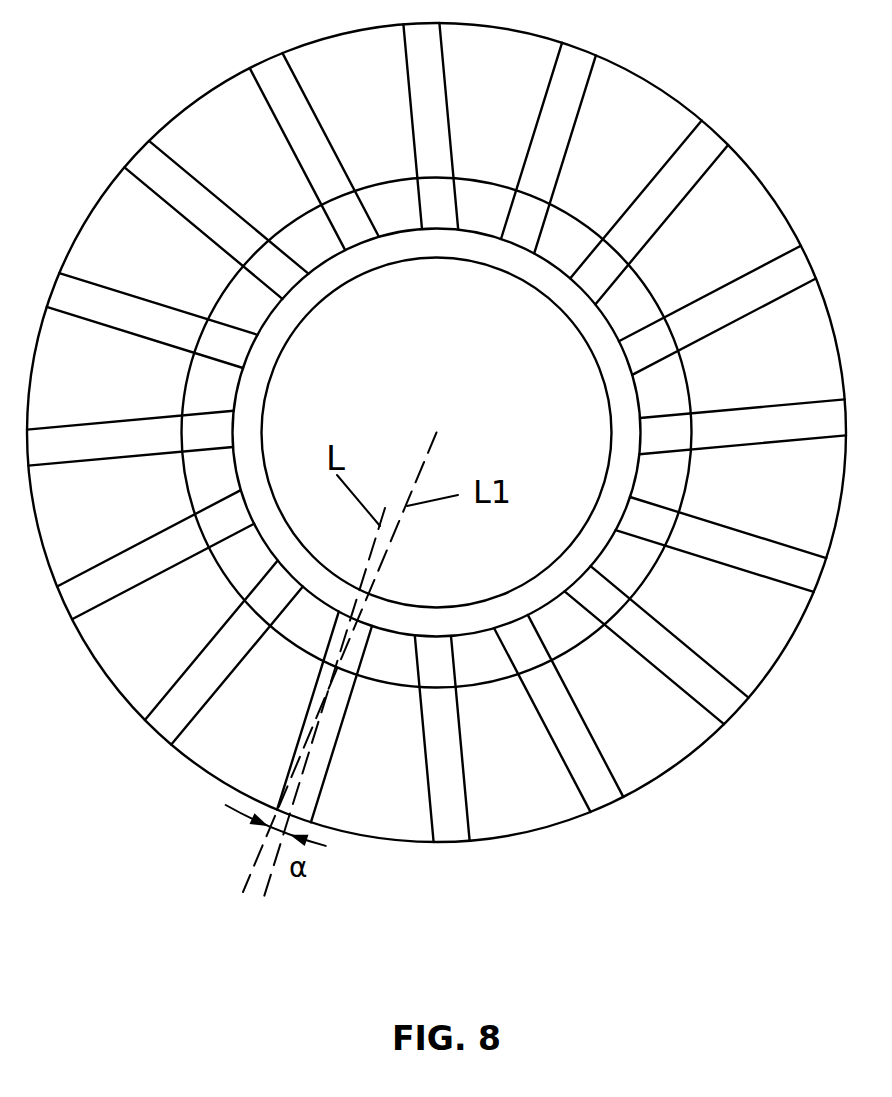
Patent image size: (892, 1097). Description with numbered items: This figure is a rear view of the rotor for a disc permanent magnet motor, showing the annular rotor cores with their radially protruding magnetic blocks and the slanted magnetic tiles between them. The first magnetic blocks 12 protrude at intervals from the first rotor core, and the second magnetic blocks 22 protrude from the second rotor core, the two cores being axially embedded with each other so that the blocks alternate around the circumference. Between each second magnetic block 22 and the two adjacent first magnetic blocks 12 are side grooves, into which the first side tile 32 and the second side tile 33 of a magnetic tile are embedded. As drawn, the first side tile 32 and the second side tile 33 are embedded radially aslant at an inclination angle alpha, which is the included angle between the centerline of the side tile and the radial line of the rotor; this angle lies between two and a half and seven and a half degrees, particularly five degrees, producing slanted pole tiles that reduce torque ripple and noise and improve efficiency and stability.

The first magnetic block 12 is at (255, 700).
The second magnetic block 22 is at (372, 790).
The first side tile 32 is at (302, 722).
The second side tile 33 is at (443, 746).